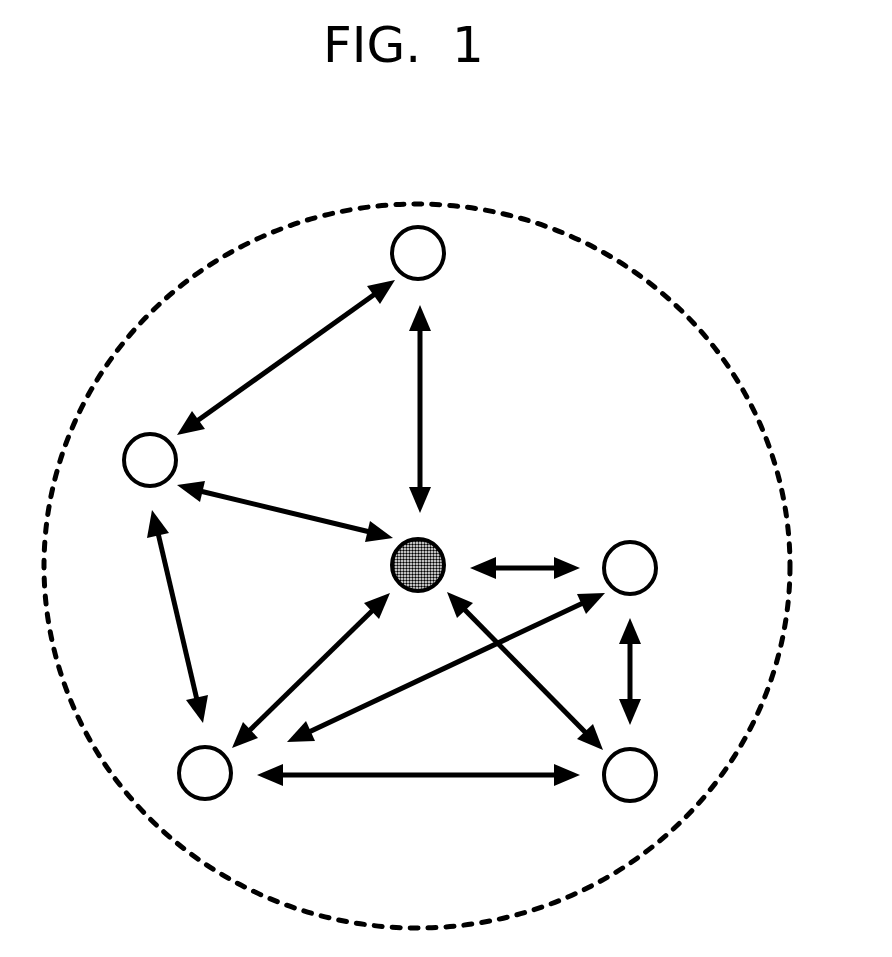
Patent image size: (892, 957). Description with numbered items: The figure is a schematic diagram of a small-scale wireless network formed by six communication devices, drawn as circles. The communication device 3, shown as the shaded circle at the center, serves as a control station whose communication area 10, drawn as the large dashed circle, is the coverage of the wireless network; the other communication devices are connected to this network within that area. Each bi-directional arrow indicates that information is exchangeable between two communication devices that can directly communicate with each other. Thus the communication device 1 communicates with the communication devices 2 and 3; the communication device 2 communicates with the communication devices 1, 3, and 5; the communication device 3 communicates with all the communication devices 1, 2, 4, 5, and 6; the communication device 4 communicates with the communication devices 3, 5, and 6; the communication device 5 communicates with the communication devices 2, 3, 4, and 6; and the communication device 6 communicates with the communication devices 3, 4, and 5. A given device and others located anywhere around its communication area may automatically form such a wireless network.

The communication device 1 is at (445, 244).
The communication device 2 is at (124, 472).
The communication device 3 is at (439, 549).
The communication device 4 is at (657, 567).
The communication device 5 is at (224, 793).
The communication device 6 is at (657, 773).
The communication area 10 is at (697, 810).